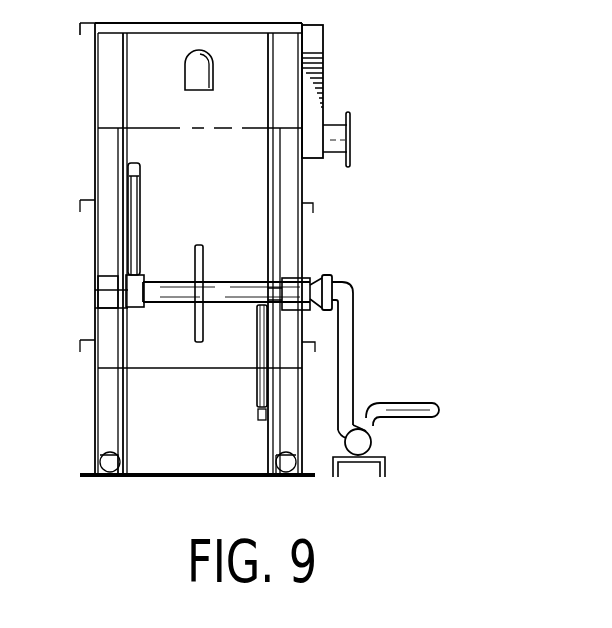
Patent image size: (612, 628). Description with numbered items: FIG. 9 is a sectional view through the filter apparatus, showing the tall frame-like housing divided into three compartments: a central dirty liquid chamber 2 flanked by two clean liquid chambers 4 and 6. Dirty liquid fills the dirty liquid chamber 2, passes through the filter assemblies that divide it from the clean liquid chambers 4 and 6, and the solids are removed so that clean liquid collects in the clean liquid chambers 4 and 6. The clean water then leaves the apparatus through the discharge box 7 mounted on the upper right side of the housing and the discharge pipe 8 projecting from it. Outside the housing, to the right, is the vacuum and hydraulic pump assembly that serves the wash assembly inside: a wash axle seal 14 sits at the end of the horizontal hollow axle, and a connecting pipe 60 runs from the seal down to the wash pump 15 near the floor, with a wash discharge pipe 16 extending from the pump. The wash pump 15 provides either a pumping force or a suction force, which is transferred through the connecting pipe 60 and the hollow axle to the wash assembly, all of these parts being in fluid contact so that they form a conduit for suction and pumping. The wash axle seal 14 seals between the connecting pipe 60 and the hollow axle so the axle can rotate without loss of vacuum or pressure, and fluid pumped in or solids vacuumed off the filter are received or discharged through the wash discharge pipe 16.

The dirty liquid chamber 2 is at (204, 191).
The clean liquid chamber 4 is at (108, 147).
The clean liquid chamber 6 is at (303, 243).
The discharge box 7 is at (323, 43).
The discharge pipe 8 is at (350, 131).
The wash axle seal 14 is at (333, 281).
The wash pump 15 is at (372, 447).
The wash discharge pipe 16 is at (421, 402).
The connecting pipe 60 is at (355, 345).